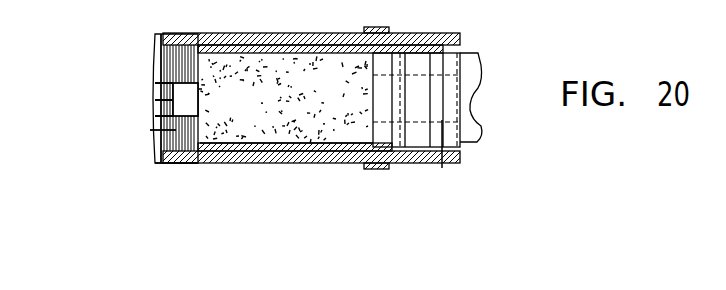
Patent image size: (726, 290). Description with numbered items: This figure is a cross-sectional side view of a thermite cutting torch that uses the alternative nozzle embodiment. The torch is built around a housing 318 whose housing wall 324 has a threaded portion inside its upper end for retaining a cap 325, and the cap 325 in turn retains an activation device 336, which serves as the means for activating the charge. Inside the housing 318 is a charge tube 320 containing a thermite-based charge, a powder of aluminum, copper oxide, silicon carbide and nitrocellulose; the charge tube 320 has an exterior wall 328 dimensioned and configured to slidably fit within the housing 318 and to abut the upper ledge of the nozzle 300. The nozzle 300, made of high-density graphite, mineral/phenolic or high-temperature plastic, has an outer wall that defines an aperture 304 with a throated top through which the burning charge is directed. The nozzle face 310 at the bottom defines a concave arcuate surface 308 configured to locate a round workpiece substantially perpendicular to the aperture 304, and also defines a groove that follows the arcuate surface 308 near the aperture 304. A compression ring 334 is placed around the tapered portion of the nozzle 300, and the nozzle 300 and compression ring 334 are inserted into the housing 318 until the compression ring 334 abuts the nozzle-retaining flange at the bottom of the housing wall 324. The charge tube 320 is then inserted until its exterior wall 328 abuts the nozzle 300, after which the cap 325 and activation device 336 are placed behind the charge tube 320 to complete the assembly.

The nozzle 300 is at (417, 63).
The aperture 304 is at (393, 104).
The concave arcuate surface 308 is at (476, 78).
The nozzle face 310 is at (482, 133).
The housing 318 is at (177, 33).
The charge tube 320 is at (230, 55).
The housing wall 324 is at (173, 163).
The cap 325 is at (150, 130).
The exterior wall of charge tube 328 is at (255, 103).
The compression ring 334 is at (442, 168).
The activation device 336 is at (157, 100).